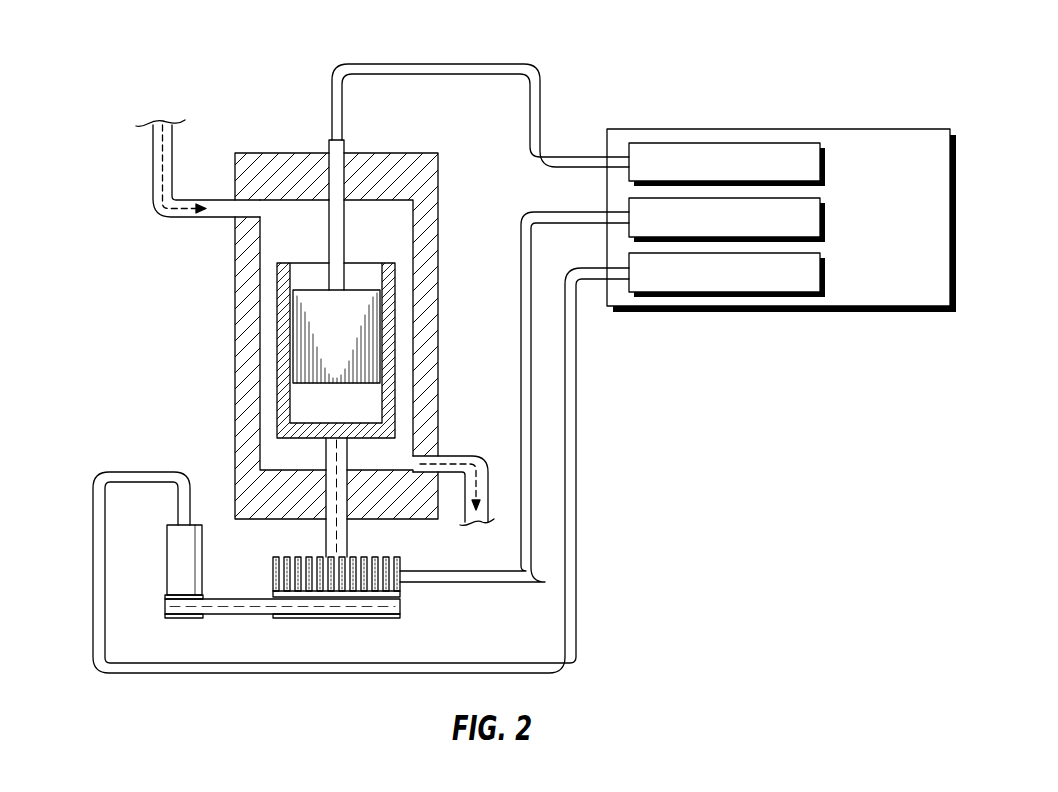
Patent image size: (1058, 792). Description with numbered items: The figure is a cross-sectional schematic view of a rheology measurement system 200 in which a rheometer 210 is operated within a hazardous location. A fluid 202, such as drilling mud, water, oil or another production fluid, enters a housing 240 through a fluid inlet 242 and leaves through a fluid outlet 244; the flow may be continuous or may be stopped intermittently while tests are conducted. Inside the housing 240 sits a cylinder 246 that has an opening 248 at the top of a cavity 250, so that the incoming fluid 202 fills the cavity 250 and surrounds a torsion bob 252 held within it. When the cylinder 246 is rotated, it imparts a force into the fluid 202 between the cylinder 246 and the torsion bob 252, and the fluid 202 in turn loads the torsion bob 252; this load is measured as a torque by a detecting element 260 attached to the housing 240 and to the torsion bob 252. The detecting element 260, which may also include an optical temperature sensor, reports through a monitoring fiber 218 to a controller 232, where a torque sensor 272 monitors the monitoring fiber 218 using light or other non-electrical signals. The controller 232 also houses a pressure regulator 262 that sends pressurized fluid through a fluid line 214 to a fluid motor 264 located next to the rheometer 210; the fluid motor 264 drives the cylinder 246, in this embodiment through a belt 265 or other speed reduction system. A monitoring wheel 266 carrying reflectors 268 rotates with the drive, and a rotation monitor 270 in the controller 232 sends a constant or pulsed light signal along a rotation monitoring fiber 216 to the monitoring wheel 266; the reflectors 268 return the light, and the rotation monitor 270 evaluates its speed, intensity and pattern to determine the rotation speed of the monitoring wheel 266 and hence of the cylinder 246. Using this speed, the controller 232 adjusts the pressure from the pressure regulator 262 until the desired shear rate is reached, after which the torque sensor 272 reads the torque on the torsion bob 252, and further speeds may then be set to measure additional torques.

The rheology measurement system 200 is at (136, 40).
The fluid 202 is at (153, 180).
The rheometer 210 is at (287, 119).
The fluid line 214 is at (577, 393).
The rotation monitoring fiber 216 is at (521, 303).
The monitoring fiber 218 is at (540, 113).
The controller 232 is at (895, 129).
The housing 240 is at (235, 278).
The fluid inlet 242 is at (217, 200).
The fluid outlet 244 is at (455, 456).
The cylinder 246 is at (277, 392).
The opening 248 is at (364, 269).
The cavity 250 is at (357, 421).
The torsion bob 252 is at (312, 353).
The detecting element 260 is at (344, 148).
The pressure regulator 262 is at (746, 286).
The fluid motor 264 is at (170, 567).
The belt 265 is at (248, 604).
The monitoring wheel 266 is at (375, 632).
The reflectors 268 is at (377, 556).
The rotation monitor 270 is at (746, 231).
The torque sensor 272 is at (746, 176).